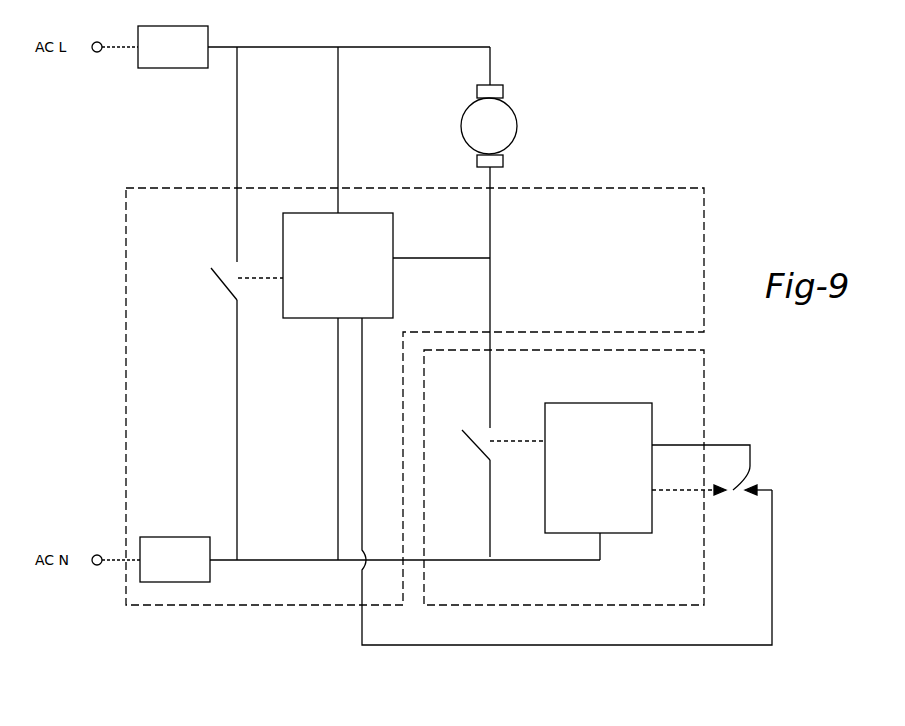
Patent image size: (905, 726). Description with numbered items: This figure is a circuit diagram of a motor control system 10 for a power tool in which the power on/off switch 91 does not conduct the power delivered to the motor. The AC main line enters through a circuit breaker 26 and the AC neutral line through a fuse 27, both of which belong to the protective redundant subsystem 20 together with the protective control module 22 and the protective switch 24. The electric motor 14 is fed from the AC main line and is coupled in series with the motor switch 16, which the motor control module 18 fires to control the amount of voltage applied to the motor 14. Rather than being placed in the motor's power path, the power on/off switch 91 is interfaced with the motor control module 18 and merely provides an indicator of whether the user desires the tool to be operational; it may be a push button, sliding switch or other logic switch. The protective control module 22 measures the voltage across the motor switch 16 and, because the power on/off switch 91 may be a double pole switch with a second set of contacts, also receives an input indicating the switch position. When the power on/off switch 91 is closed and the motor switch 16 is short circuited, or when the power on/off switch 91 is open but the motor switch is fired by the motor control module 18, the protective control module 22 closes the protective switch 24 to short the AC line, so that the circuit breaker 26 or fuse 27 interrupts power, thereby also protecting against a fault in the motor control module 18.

The motor control system 10 is at (112, 308).
The electric motor 14 is at (518, 133).
The motor switch 16 is at (469, 447).
The motor control module 18 is at (617, 537).
The protective redundant subsystem 20 is at (153, 188).
The protective control module 22 is at (395, 238).
The protective switch 24 is at (225, 287).
The circuit breaker 26 is at (178, 68).
The fuse 27 is at (183, 537).
The power on/off switch 91 is at (752, 480).